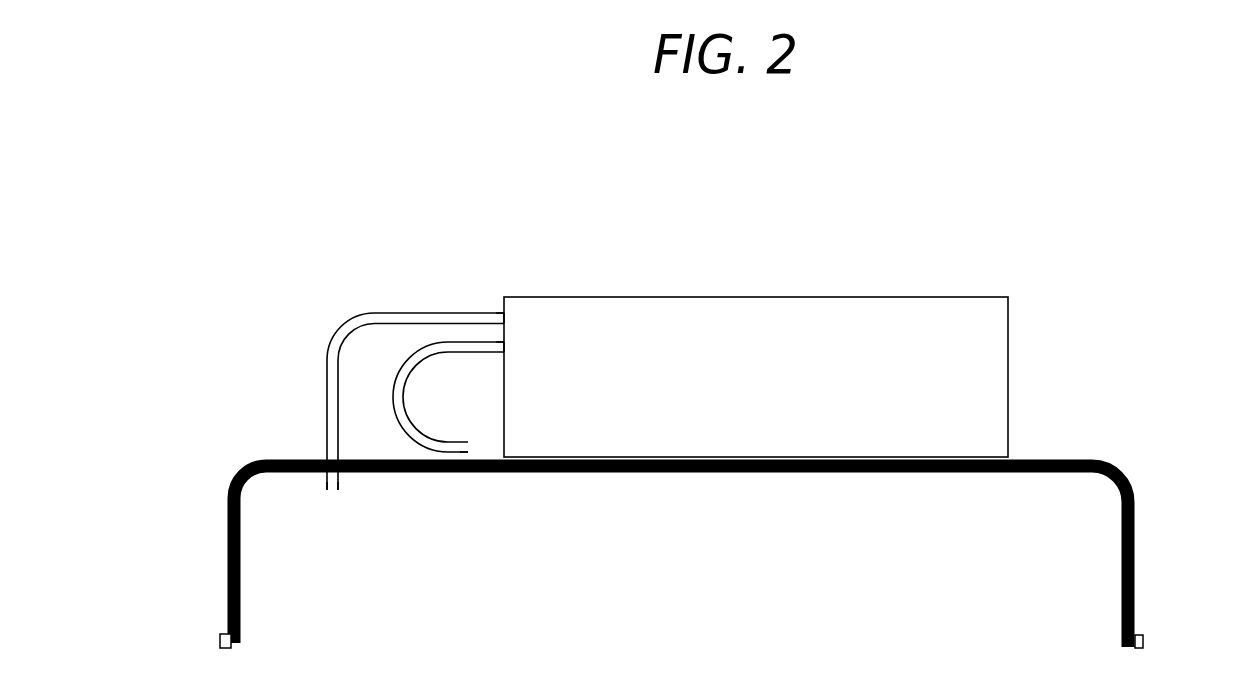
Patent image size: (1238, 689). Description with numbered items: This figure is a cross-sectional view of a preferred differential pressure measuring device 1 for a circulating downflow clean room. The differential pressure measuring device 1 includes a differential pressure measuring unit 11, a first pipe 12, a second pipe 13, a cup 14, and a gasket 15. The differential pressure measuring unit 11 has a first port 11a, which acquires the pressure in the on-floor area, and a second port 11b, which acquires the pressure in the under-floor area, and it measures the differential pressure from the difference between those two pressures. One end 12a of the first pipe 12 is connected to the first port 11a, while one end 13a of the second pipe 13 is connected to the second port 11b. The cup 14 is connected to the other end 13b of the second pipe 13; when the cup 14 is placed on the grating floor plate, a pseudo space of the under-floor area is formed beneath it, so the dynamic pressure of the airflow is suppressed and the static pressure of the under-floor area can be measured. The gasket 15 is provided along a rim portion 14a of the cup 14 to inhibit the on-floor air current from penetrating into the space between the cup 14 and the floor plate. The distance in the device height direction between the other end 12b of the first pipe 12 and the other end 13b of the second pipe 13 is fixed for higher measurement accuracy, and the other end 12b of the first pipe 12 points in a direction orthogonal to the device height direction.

The differential pressure measuring device 1 is at (773, 213).
The differential pressure measuring unit 11 is at (860, 297).
The first port 11a is at (503, 349).
The second port 11b is at (504, 318).
The first pipe 12 is at (405, 390).
The one end of the first pipe 12a is at (484, 362).
The other end of the first pipe 12b is at (467, 453).
The second pipe 13 is at (420, 312).
The one end of the second pipe 13a is at (502, 313).
The other end of the second pipe 13b is at (340, 483).
The cup 14 is at (1085, 459).
The rim portion 14a is at (233, 645).
The gasket 15 is at (1143, 638).